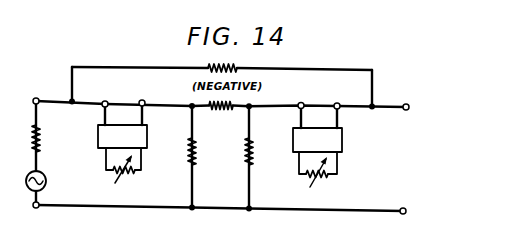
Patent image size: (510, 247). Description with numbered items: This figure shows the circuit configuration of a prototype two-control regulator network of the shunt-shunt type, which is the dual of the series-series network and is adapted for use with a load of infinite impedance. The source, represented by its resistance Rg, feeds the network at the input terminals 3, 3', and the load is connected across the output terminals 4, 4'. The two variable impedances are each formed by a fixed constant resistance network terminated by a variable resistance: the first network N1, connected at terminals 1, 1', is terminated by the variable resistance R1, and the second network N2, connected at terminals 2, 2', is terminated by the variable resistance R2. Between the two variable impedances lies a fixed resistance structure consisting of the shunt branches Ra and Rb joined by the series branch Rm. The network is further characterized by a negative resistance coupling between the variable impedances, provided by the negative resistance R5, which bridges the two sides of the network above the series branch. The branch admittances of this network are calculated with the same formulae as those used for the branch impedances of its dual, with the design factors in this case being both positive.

The terminal of network N1 1 is at (107, 96).
The terminal of network N1 1' is at (145, 95).
The terminal of network N2 2 is at (302, 98).
The terminal of network N2 2' is at (340, 98).
The input terminal 3 is at (30, 100).
The input terminal 3' is at (29, 205).
The load terminal 4 is at (412, 107).
The load terminal 4' is at (410, 211).
The source resistance Rg is at (21, 138).
The variable resistance R1 is at (123, 172).
The variable resistance R2 is at (318, 176).
The shunt branch resistance Ra is at (202, 151).
The shunt branch resistance Rb is at (259, 151).
The series branch resistance Rm is at (221, 118).
The negative resistance R5 is at (231, 63).
The constant resistance network N1 is at (122, 136).
The constant resistance network N2 is at (317, 140).